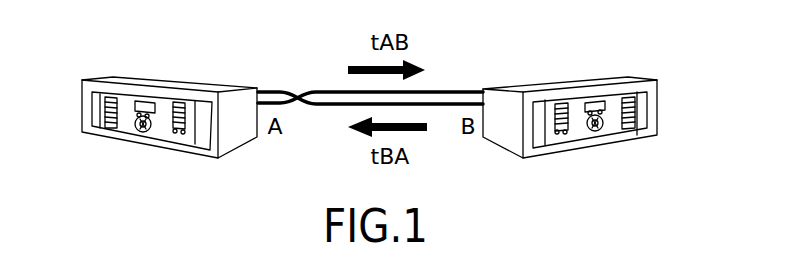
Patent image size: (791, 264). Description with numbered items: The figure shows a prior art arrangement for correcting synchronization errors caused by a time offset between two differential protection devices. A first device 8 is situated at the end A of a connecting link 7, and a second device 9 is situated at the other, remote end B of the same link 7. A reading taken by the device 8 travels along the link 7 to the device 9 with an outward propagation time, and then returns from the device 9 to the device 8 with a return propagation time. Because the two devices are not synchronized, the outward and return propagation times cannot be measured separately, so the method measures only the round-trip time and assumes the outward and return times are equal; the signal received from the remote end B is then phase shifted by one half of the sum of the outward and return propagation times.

The link 7 is at (457, 78).
The device 8 is at (168, 81).
The device 9 is at (567, 88).